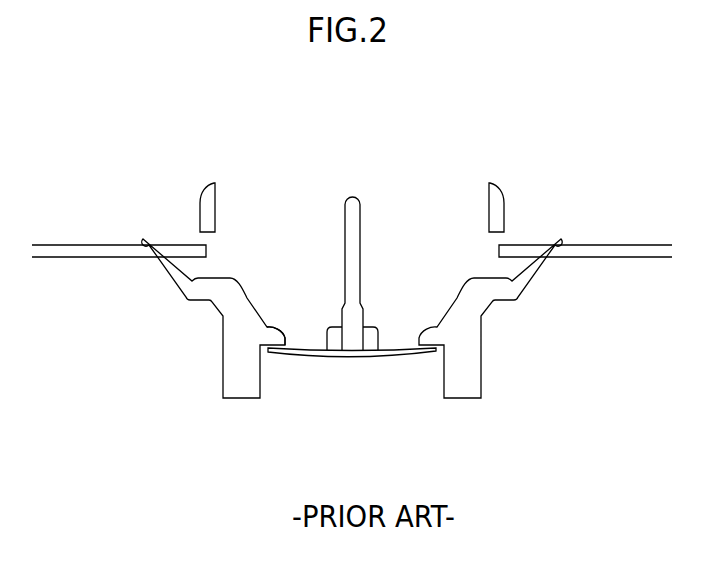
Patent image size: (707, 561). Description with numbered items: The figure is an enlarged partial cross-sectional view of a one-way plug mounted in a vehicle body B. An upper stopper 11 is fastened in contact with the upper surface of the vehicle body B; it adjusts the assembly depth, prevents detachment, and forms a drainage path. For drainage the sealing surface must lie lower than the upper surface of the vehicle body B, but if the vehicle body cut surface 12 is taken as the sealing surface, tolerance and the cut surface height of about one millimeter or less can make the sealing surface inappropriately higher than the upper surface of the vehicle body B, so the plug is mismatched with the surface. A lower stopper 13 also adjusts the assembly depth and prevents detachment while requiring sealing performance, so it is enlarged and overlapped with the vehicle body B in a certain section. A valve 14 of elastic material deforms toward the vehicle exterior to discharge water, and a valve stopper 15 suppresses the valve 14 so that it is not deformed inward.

The vehicle body B is at (630, 250).
The upper stopper 11 is at (498, 205).
The vehicle body cut surface 12 is at (563, 238).
The lower stopper 13 is at (160, 263).
The valve 14 is at (319, 356).
The valve stopper 15 is at (270, 323).